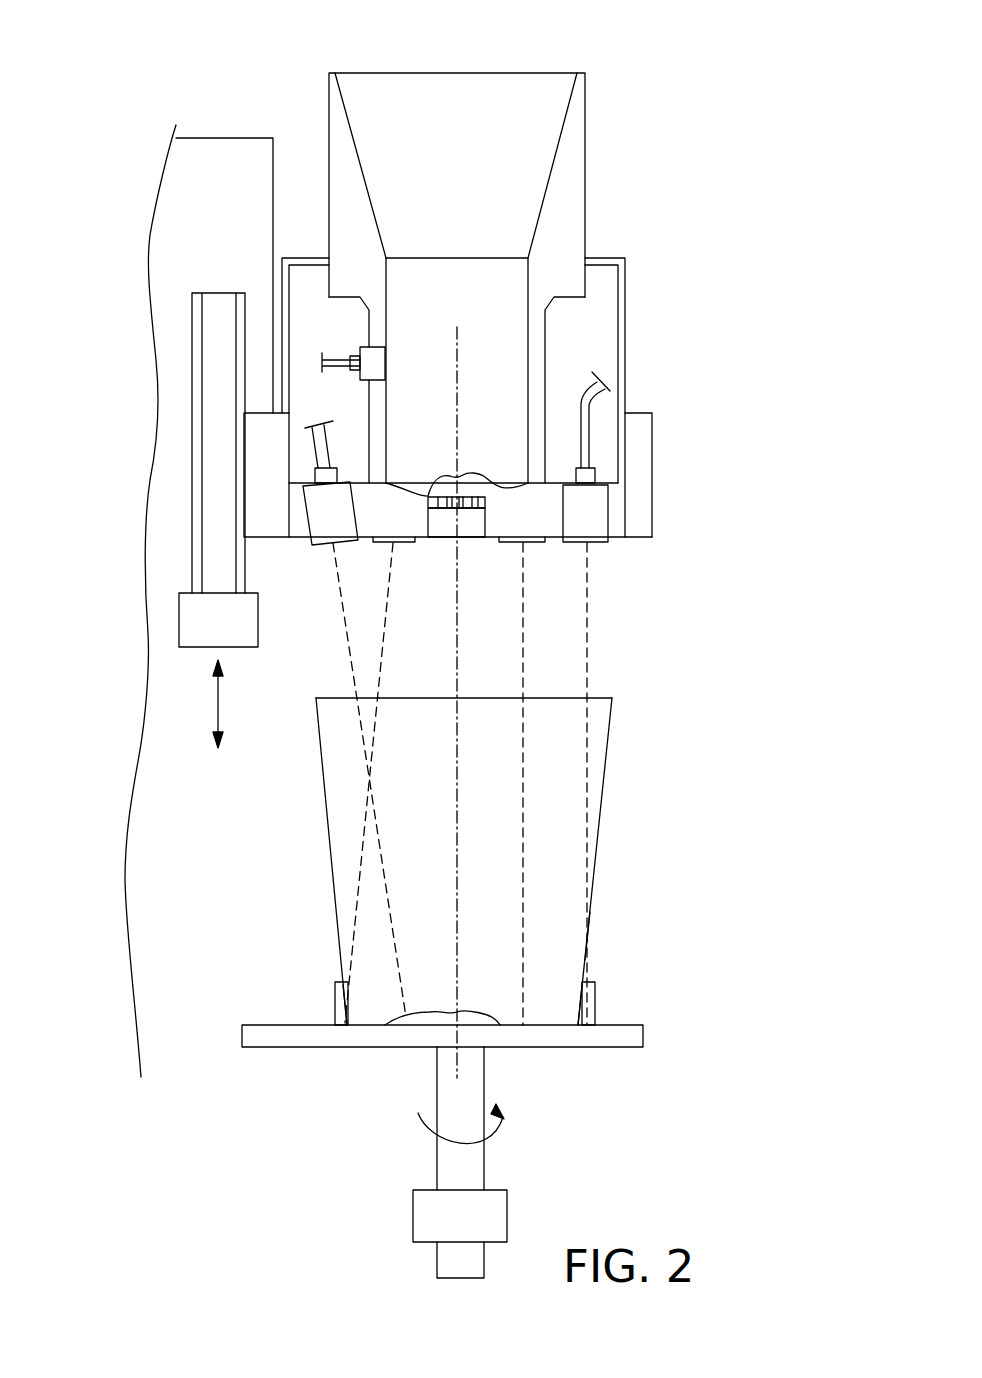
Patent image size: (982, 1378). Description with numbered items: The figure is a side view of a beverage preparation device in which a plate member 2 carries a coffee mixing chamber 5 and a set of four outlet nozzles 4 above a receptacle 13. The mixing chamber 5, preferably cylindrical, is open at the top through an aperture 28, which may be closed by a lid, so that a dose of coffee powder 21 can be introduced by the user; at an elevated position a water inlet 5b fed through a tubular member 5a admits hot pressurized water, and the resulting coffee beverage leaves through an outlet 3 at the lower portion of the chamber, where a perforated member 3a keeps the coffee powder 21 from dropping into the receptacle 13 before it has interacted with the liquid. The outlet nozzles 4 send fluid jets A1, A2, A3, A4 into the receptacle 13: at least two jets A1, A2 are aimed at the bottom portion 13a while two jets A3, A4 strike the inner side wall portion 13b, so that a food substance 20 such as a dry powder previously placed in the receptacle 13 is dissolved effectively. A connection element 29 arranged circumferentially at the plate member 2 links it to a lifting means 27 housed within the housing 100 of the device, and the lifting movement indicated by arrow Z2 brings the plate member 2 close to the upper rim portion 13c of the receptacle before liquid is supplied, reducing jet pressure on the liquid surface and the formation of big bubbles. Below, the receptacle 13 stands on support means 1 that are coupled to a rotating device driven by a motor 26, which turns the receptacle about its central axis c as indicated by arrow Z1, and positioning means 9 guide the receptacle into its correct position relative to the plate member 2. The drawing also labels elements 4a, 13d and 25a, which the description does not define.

The support means 1 is at (644, 1040).
The plate member 2 is at (612, 523).
The outlet 3 is at (445, 527).
The perforated member 3a is at (447, 497).
The outlet nozzles 4 is at (333, 542).
The nozzle tube 4a is at (318, 447).
The coffee mixing chamber 5 is at (513, 277).
The tubular member 5a is at (340, 358).
The water inlet 5b is at (385, 362).
The positioning means 9 is at (588, 1028).
The receptacle 13 is at (602, 715).
The bottom portion 13a is at (596, 1000).
The inner side wall portion 13b is at (588, 950).
The upper rim portion 13c is at (612, 697).
The cup base 13d is at (349, 1028).
The food substance 20 is at (470, 1012).
The coffee powder 21 is at (470, 483).
The outlet opening 25a is at (488, 505).
The motor 26 is at (179, 613).
The lifting means 27 is at (197, 397).
The aperture 28 is at (463, 72).
The connection element 29 is at (642, 472).
The housing 100 is at (143, 913).
The central axis c is at (457, 650).
The fluid jet A1 is at (378, 849).
The fluid jet A2 is at (525, 828).
The fluid jet A3 is at (590, 778).
The fluid jet A4 is at (362, 743).
The arrow indicating rotation Z1 is at (473, 1118).
The arrow indicating lifting movement Z2 is at (233, 704).